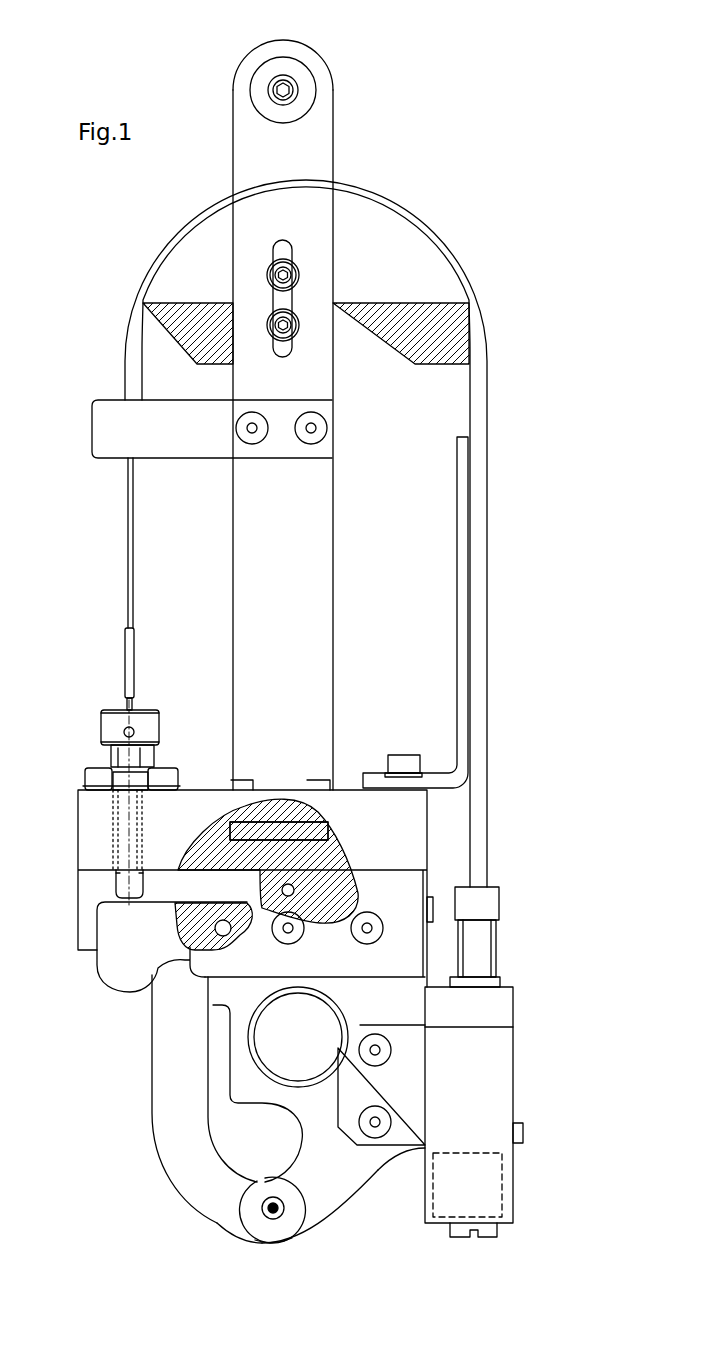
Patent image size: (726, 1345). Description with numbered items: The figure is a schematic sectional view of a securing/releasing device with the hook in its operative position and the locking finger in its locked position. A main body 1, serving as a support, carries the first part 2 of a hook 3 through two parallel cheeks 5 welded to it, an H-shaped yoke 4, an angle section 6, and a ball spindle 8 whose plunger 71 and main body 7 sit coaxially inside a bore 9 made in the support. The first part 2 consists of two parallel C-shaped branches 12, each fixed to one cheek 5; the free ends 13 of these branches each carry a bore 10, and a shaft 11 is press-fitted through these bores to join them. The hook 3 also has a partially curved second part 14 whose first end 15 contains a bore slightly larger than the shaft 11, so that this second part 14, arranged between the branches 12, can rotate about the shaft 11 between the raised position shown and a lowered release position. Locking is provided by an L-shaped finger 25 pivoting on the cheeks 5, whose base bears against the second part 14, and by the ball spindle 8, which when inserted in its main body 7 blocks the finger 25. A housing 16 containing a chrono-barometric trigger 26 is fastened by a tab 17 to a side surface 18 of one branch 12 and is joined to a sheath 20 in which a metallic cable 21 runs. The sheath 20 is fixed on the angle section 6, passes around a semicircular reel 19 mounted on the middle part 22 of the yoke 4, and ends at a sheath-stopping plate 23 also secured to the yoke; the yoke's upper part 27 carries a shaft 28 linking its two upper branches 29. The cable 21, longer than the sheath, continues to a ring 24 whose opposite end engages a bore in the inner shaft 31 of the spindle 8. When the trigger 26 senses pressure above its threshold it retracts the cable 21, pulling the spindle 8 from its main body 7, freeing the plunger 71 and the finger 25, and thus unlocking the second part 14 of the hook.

The main body 1 is at (78, 807).
The first part of hook 2 is at (347, 1190).
The hook 3 is at (193, 1218).
The H-shaped yoke 4 is at (307, 148).
The cheeks 5 is at (287, 874).
The angle section 6 is at (458, 530).
The main body of ball spindle 7 is at (115, 833).
The ball spindle 8 is at (110, 733).
The bore 9 is at (115, 853).
The bore 10 is at (273, 1217).
The shaft 11 is at (260, 1215).
The C-shaped branches 12 is at (357, 1170).
The ends of branches 13 is at (278, 1237).
The second part of hook 14 is at (163, 1113).
The first end of second part 15 is at (240, 1228).
The housing 16 is at (491, 1112).
The fastening tab 17 is at (381, 1085).
The side surface 18 is at (298, 1078).
The semicircular reel 19 is at (450, 270).
The sheath 20 is at (482, 815).
The metallic cable 21 is at (128, 528).
The middle part of yoke 22 is at (308, 292).
The plate 23 is at (105, 427).
The ring 24 is at (128, 652).
The locking finger 25 is at (172, 946).
The chrono-barometric trigger 26 is at (507, 1178).
The upper part of yoke 27 is at (335, 68).
The shaft 28 is at (268, 75).
The upper branches 29 is at (250, 128).
The inner shaft of ball spindle 31 is at (132, 703).
The plunger 71 is at (137, 820).